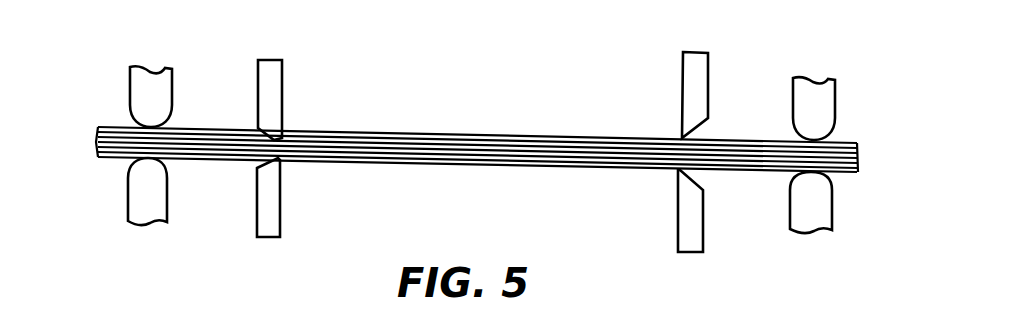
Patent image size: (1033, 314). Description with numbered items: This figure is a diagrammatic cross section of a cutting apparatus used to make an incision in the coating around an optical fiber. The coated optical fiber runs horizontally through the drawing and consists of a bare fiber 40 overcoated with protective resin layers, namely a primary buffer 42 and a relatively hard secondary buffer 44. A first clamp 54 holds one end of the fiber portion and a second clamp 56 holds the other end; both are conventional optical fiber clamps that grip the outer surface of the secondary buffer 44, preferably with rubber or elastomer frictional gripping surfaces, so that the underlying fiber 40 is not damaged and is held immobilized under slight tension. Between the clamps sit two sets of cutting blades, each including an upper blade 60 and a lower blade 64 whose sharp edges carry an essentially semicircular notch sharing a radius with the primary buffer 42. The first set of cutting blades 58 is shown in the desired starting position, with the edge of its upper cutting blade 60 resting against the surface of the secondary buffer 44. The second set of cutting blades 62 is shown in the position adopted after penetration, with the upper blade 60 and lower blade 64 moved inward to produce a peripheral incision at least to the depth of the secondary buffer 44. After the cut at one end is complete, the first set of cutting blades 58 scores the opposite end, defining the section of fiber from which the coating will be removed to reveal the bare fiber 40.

The bare fiber 40 is at (477, 111).
The primary buffer 42 is at (430, 147).
The secondary buffer 44 is at (365, 133).
The first clamp 54 is at (862, 117).
The second clamp 56 is at (108, 92).
The first set of cutting blades 58 is at (679, 147).
The upper cutting blade 60 is at (700, 112).
The second set of cutting blades 62 is at (310, 104).
The lower cutting blade 64 is at (690, 203).